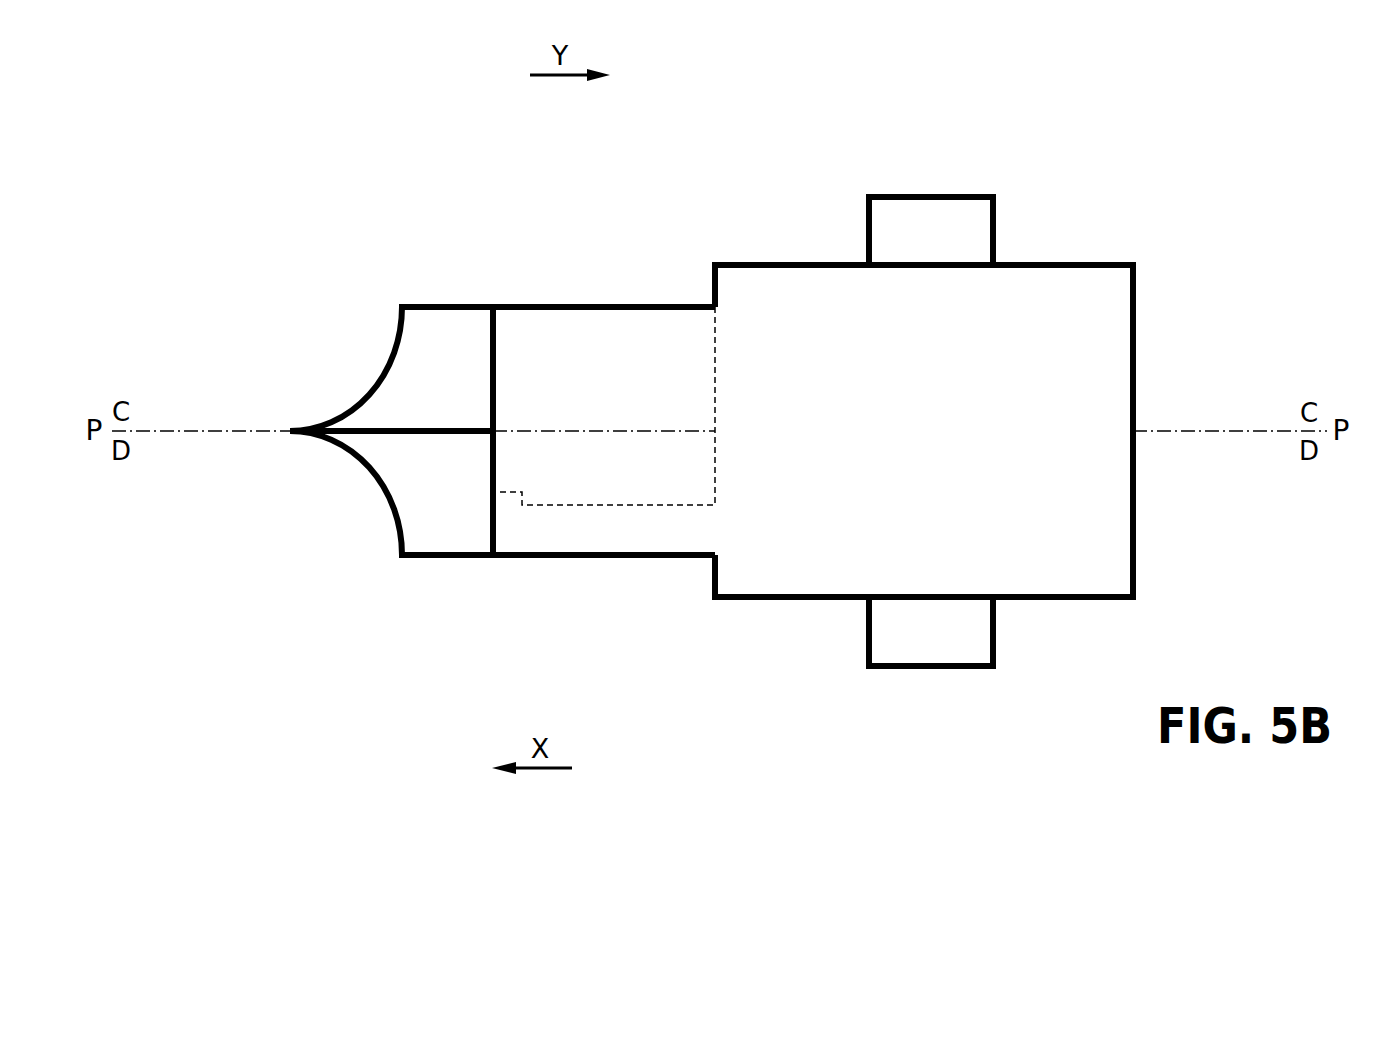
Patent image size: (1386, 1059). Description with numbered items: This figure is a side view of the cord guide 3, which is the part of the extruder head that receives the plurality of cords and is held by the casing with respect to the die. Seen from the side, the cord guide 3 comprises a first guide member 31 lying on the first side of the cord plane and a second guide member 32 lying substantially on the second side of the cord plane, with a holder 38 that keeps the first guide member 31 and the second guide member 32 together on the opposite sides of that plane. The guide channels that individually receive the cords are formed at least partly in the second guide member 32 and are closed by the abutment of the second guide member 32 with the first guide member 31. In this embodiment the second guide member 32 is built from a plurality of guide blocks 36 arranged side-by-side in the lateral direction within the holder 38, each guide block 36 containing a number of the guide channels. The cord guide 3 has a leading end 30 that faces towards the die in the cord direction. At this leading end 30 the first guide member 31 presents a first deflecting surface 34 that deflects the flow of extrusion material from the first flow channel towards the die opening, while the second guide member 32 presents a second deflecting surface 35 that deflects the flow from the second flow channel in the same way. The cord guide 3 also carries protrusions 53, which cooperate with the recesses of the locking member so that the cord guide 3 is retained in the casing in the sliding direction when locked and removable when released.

The cord guide 3 is at (578, 188).
The leading end 30 is at (290, 431).
The first guide member 31 is at (467, 322).
The second guide member 32 is at (447, 531).
The first deflecting surface 34 is at (362, 392).
The second deflecting surface 35 is at (372, 482).
The guide block 36 is at (469, 513).
The holder 38 is at (1107, 515).
The protrusion 53 is at (947, 218).